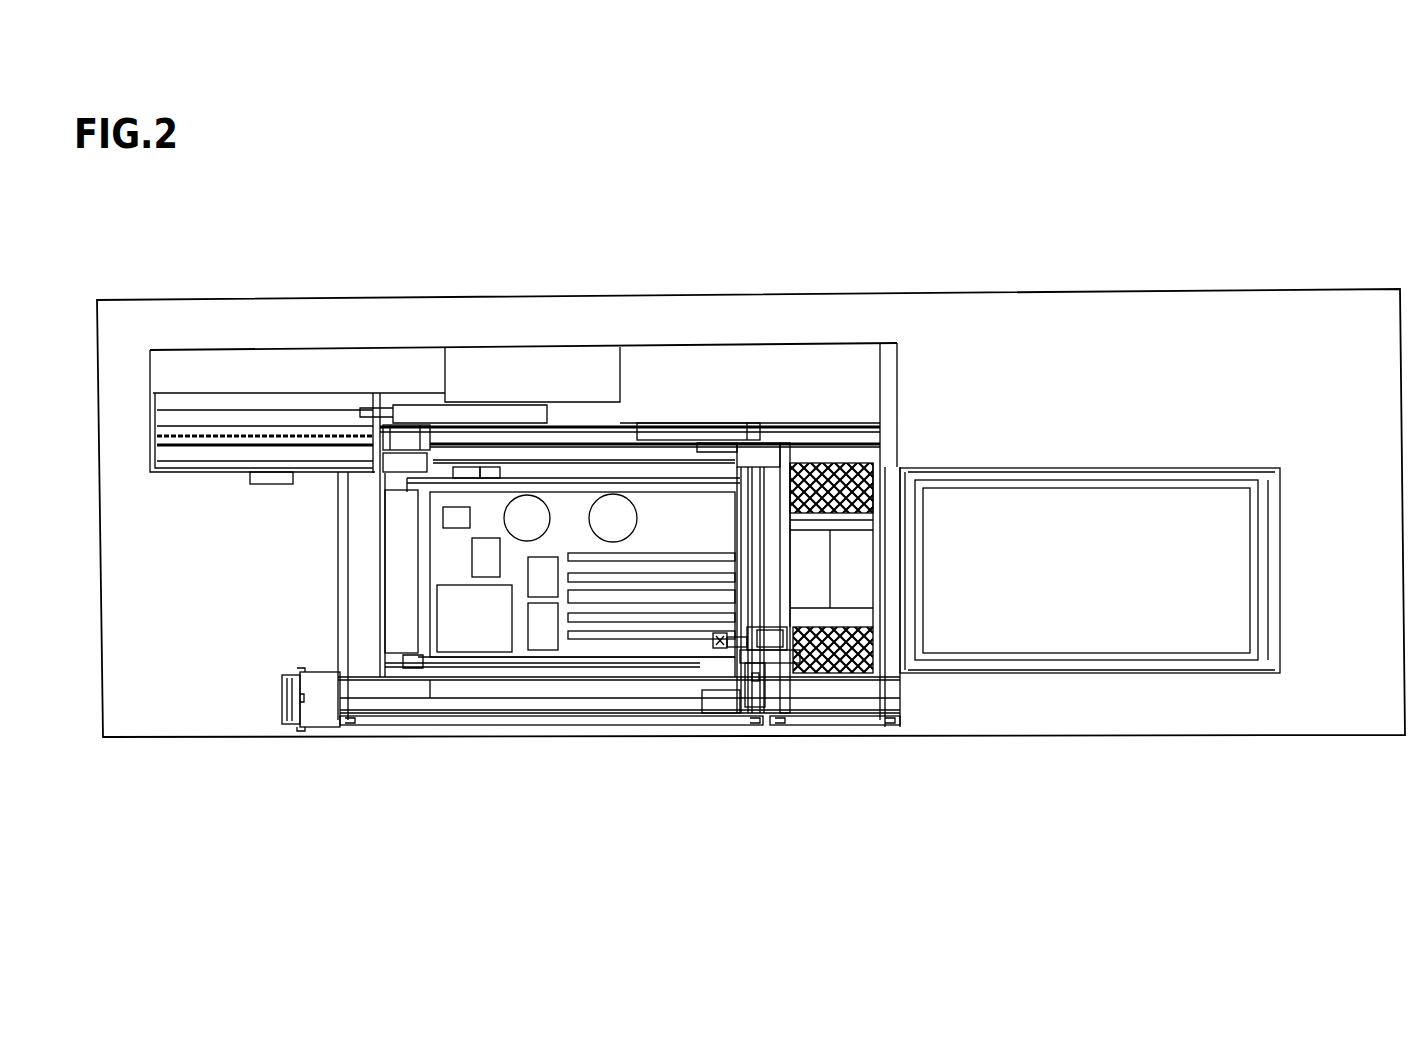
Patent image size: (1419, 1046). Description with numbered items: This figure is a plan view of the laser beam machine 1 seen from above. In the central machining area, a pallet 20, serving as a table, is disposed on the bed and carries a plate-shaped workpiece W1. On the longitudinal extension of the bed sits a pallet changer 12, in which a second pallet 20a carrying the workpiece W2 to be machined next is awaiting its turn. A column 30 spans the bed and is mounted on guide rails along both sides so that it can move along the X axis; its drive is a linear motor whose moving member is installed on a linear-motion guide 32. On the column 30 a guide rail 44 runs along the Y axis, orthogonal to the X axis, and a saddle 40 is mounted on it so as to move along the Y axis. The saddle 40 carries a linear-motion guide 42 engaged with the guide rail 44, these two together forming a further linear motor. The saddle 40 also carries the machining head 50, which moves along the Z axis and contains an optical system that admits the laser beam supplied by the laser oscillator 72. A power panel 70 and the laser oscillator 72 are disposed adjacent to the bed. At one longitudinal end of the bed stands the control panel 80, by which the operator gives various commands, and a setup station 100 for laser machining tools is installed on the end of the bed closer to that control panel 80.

The laser beam machine 1 is at (927, 268).
The power panel 70 is at (362, 365).
The laser oscillator 72 is at (815, 355).
The guide rail 44 is at (750, 468).
The workpiece W1 is at (673, 510).
The workpiece W2 is at (1077, 512).
The setup station 100 is at (396, 552).
The control panel 80 is at (318, 717).
The pallet 20 is at (520, 648).
The machining head 50 is at (710, 642).
The linear-motion guide 32 is at (718, 700).
The column 30 is at (758, 703).
The linear-motion guide 42 is at (757, 670).
The saddle 40 is at (798, 672).
The pallet changer 12 is at (1075, 667).
The pallet 20a is at (1196, 647).